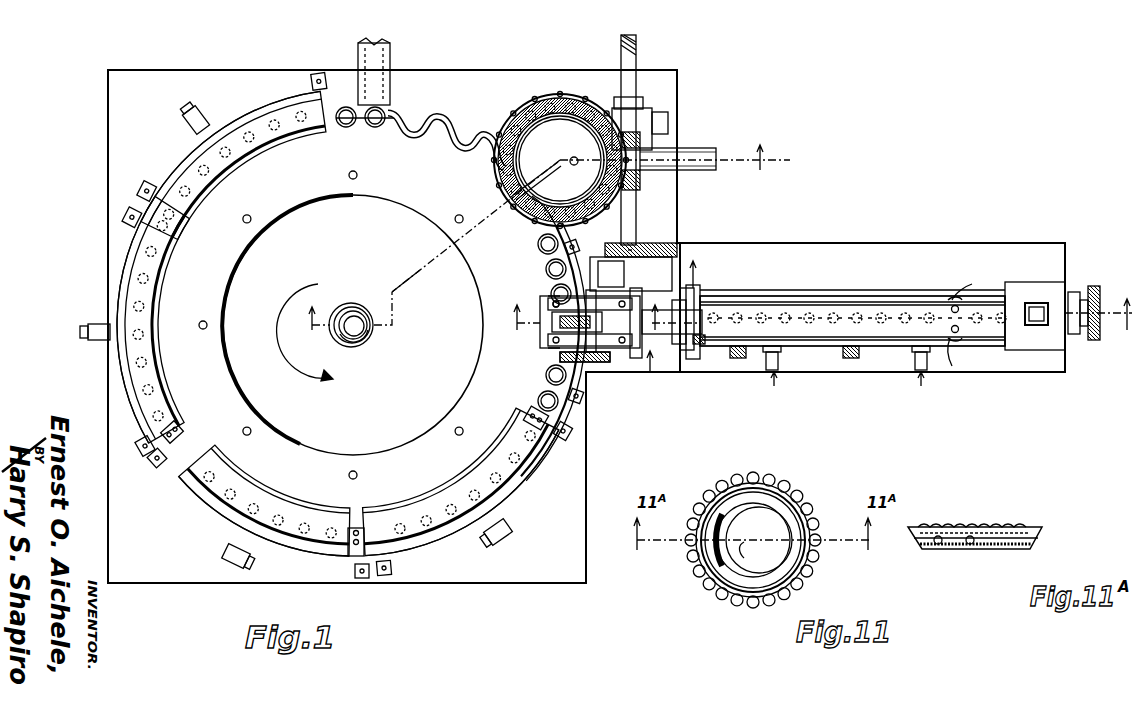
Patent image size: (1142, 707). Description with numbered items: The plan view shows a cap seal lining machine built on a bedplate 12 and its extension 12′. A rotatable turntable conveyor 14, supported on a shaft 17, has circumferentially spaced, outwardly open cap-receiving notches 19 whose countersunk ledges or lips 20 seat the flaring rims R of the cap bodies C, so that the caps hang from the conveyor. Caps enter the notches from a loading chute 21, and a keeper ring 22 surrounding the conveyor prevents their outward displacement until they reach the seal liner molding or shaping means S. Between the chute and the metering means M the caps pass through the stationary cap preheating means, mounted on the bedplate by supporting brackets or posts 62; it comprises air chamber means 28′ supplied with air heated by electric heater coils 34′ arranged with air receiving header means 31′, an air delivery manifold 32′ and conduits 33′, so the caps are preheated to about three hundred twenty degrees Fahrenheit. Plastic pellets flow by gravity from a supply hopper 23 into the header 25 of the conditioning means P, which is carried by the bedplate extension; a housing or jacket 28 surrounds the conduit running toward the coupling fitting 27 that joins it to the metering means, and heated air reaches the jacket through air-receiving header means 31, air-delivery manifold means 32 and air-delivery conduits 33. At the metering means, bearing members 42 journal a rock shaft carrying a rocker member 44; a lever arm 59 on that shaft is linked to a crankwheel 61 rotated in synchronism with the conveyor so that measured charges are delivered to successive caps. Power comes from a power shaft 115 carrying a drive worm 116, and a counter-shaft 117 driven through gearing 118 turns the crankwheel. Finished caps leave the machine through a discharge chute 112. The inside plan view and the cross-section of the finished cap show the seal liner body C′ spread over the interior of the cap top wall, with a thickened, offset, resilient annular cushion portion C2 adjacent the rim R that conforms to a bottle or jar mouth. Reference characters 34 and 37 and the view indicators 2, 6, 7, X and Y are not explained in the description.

In FIG. 1, the bedplate 12 is at (212, 571).
In FIG. 1, the bedplate extension 12′ is at (892, 243).
In FIG. 1, the turntable conveyor 14 is at (270, 437).
In FIG. 1, the shaft 17 is at (355, 308).
In FIG. 1, the cap-receiving notches 19 is at (420, 126).
In FIG. 1, the countersunk internal ledges or lips 20 is at (468, 134).
In FIG. 1, the loading chute 21 is at (392, 60).
In FIG. 1, the keeper ring 22 is at (566, 420).
In FIG. 1, the supply hopper 23 is at (1038, 302).
In FIG. 1, the header 25 is at (1018, 290).
In FIG. 1, the coupling fitting 27 is at (694, 360).
In FIG. 1, the housing or jacket 28 is at (860, 296).
In FIG. 1, the air chamber means 28′ is at (275, 150).
In FIG. 1, the air-receiving header means 31 is at (738, 304).
In FIG. 1, the air receiving header means 31′ is at (205, 188).
In FIG. 1, the air-delivery manifold means 32 is at (790, 358).
In FIG. 1, the air delivery manifold 32′ is at (260, 112).
In FIG. 1, the air-delivery conduits 33 is at (768, 386).
In FIG. 1, the conduits 33′ is at (181, 110).
In FIG. 1, the rail holes 34 is at (752, 324).
In FIG. 1, the electric heater coils 34′ is at (240, 160).
In FIG. 1, the pawl 37 is at (824, 302).
In FIG. 1, the bearing members 42 is at (548, 296).
In FIG. 1, the rocker member 44 is at (552, 300).
In FIG. 1, the lever arm 59 is at (590, 366).
In FIG. 1, the crankwheel 61 is at (678, 360).
In FIG. 1, the supporting brackets or posts 62 is at (312, 84).
In FIG. 1, the discharge chute 112 is at (690, 150).
In FIG. 1, the power shaft 115 is at (636, 54).
In FIG. 1, the drive worm 116 is at (646, 176).
In FIG. 1, the counter-shaft 117 is at (672, 268).
In FIG. 1, the gearing 118 is at (676, 246).
In FIG. 1, the cap body C is at (346, 110).
In FIG. 11, the cap body C is at (742, 609).
In FIG. 11A, the cap body C is at (996, 549).
In FIG. 11, the seal liner body C′ is at (712, 572).
In FIG. 11A, the seal liner body C′ is at (966, 549).
In FIG. 11, the annular cushion portion C2 is at (782, 506).
In FIG. 11A, the annular cushion portion C2 is at (938, 549).
In FIG. 11, the flaring rim R is at (788, 494).
In FIG. 11A, the flaring rim R is at (1000, 527).
In FIG. 1, the seal liner molding or shaping means S is at (564, 86).
In FIG. 1, the plastic conditioning means P is at (768, 290).
In FIG. 1, the metering means M is at (540, 344).
In FIG. 1, the section line X is at (652, 381).
In FIG. 1, the section line Y is at (447, 259).
In FIG. 1, the section line 2 is at (911, 291).
In FIG. 1, the section line 6 is at (602, 305).
In FIG. 1, the section line 7 is at (528, 253).